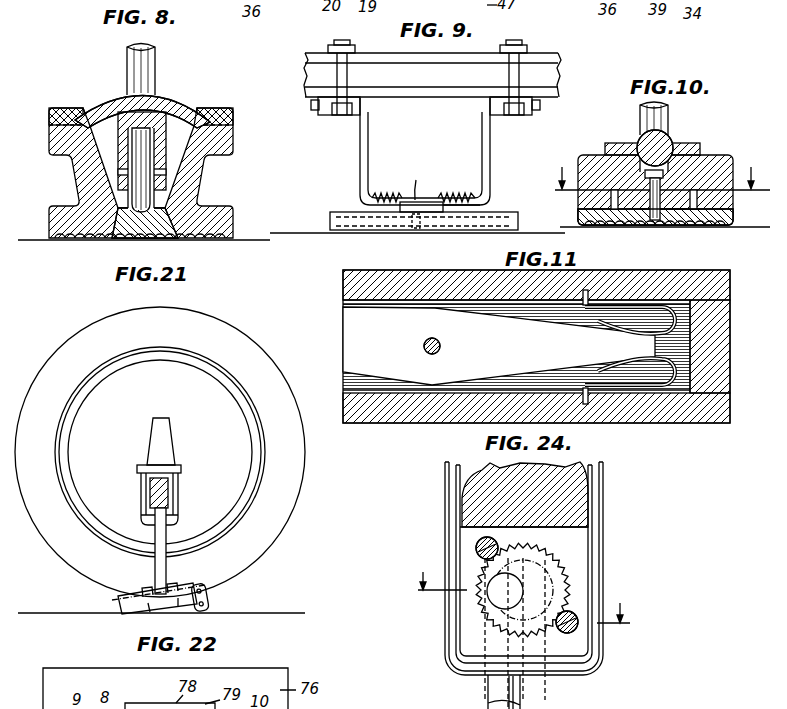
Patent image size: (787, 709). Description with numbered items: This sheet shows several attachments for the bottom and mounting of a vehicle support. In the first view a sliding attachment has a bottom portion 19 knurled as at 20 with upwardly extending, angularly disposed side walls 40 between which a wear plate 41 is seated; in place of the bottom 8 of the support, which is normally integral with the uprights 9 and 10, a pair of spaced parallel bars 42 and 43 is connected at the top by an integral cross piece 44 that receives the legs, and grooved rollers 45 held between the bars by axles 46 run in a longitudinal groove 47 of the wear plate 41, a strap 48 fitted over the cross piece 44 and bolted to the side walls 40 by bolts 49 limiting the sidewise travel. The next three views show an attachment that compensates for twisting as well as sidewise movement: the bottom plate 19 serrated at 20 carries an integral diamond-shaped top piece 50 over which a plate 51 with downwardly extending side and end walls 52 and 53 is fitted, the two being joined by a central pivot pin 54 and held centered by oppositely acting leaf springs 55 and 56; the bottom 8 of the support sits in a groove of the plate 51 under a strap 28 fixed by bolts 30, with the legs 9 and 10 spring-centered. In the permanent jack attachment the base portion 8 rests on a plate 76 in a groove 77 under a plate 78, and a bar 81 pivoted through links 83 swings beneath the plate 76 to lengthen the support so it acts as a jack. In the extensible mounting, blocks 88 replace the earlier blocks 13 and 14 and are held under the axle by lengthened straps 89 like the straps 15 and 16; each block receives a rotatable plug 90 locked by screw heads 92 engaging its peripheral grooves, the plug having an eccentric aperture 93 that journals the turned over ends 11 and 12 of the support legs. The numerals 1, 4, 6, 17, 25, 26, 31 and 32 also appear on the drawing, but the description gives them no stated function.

In FIG. 9, the frame member 1 is at (318, 74).
In FIG. 21, the frame member 1 is at (155, 490).
In FIG. 24, the frame member 1 is at (495, 485).
In FIG. 21, the wheel rim 4 is at (258, 444).
In FIG. 21, the wheel tire 6 is at (263, 358).
In FIG. 9, the bottom of the support 8 is at (487, 201).
In FIG. 10, the bottom of the support 8 is at (683, 148).
In FIG. 8, the upright 9 is at (156, 66).
In FIG. 9, the upright 9 is at (362, 154).
In FIG. 21, the upright 9 is at (156, 566).
In FIG. 9, the upright 10 is at (484, 156).
In FIG. 24, the upright 10 is at (492, 683).
In FIG. 9, the turned over end of support leg 11 is at (313, 104).
In FIG. 10, the turned over end of support leg 11 is at (660, 169).
In FIG. 9, the turned over end of support leg 12 is at (533, 104).
In FIG. 24, the turned over end of support leg 12 is at (488, 611).
In FIG. 9, the block 13 is at (329, 110).
In FIG. 21, the block 13 is at (175, 517).
In FIG. 9, the block 14 is at (516, 115).
In FIG. 9, the strap 15 is at (346, 74).
In FIG. 21, the strap 15 is at (178, 498).
In FIG. 9, the strap 16 is at (507, 75).
In FIG. 21, the base plate 17 is at (181, 472).
In FIG. 8, the bottom portion 19 is at (217, 216).
In FIG. 9, the bottom portion 19 is at (328, 228).
In FIG. 10, the bottom portion 19 is at (735, 218).
In FIG. 8, the knurling 20 is at (79, 243).
In FIG. 10, the knurling 20 is at (711, 231).
In FIG. 24, the section line 25 is at (522, 587).
In FIG. 9, the center block 26 is at (421, 186).
In FIG. 10, the strap 28 is at (672, 141).
In FIG. 10, the bolt 30 is at (620, 143).
In FIG. 9, the spring 31 is at (378, 195).
In FIG. 9, the spring 32 is at (476, 199).
In FIG. 8, the side wall 40 is at (198, 180).
In FIG. 8, the wear plate 41 is at (107, 243).
In FIG. 8, the bar 42 is at (92, 109).
In FIG. 8, the bar 43 is at (192, 110).
In FIG. 8, the cross piece 44 is at (168, 128).
In FIG. 8, the roller 45 is at (140, 192).
In FIG. 8, the axle 46 is at (128, 172).
In FIG. 8, the longitudinal groove 47 is at (163, 240).
In FIG. 8, the strap 48 is at (101, 103).
In FIG. 8, the bolt 49 is at (66, 107).
In FIG. 10, the top piece 50 is at (680, 216).
In FIG. 11, the top piece 50 is at (404, 379).
In FIG. 9, the plate 51 is at (337, 211).
In FIG. 10, the plate 51 is at (719, 164).
In FIG. 11, the plate 51 is at (343, 284).
In FIG. 10, the side wall 52 is at (593, 199).
In FIG. 11, the side wall 52 is at (477, 268).
In FIG. 11, the end wall 53 is at (731, 340).
In FIG. 9, the pivot pin 54 is at (418, 230).
In FIG. 10, the pivot pin 54 is at (648, 221).
In FIG. 11, the pivot pin 54 is at (424, 346).
In FIG. 11, the leaf spring 55 is at (700, 301).
In FIG. 11, the leaf spring 56 is at (698, 384).
In FIG. 21, the plate 76 is at (120, 603).
In FIG. 21, the groove 77 is at (148, 610).
In FIG. 21, the plate 78 is at (181, 584).
In FIG. 21, the bar 81 is at (178, 609).
In FIG. 21, the link 83 is at (208, 598).
In FIG. 24, the block 88 is at (577, 553).
In FIG. 24, the lengthened strap 89 is at (604, 491).
In FIG. 24, the plug 90 is at (560, 581).
In FIG. 24, the screw head 92 is at (481, 547).
In FIG. 24, the eccentric aperture 93 is at (488, 601).